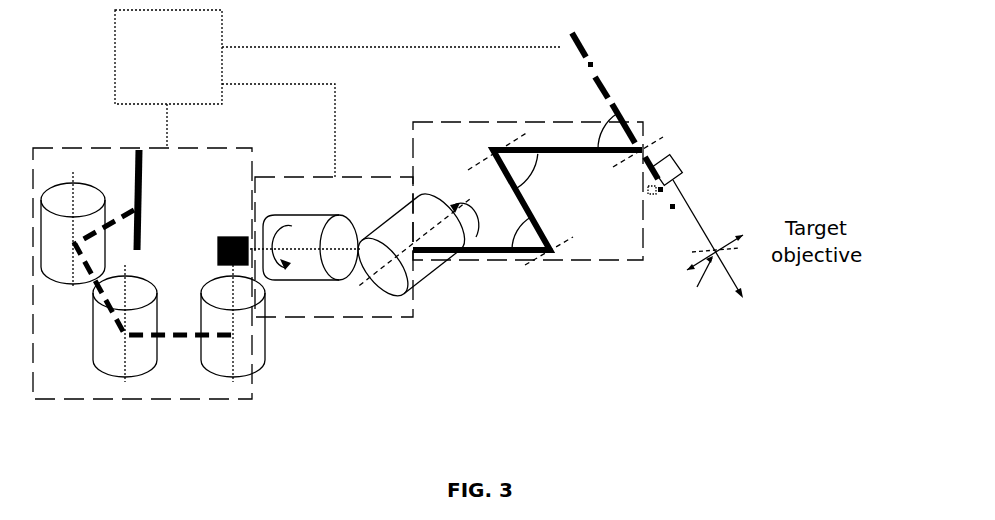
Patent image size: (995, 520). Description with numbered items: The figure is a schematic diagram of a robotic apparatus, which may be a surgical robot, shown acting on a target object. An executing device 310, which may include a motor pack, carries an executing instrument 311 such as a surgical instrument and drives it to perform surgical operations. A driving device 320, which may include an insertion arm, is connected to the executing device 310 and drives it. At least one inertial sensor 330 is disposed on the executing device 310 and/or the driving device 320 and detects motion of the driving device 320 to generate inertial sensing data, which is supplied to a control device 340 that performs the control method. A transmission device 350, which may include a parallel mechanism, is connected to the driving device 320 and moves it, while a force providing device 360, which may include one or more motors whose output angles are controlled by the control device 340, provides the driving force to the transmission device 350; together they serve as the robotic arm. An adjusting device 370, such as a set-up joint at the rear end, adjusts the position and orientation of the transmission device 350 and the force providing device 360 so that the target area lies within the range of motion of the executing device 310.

The executing device 310 is at (680, 173).
The executing instrument 311 is at (708, 223).
The driving device 320 is at (598, 58).
The inertial sensor 330 is at (582, 106).
The control device 340 is at (338, 93).
The transmission device 350 is at (505, 261).
The force providing device 360 is at (322, 317).
The adjusting device 370 is at (177, 399).